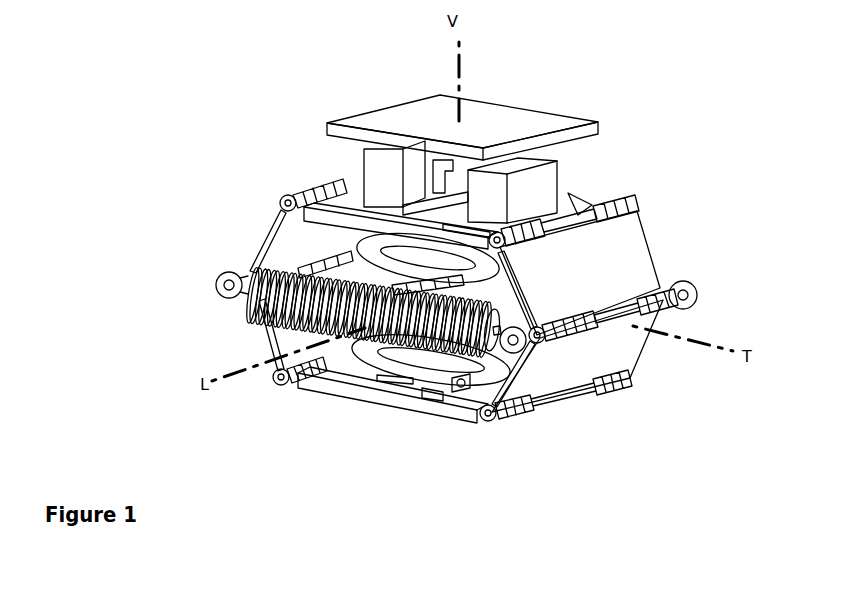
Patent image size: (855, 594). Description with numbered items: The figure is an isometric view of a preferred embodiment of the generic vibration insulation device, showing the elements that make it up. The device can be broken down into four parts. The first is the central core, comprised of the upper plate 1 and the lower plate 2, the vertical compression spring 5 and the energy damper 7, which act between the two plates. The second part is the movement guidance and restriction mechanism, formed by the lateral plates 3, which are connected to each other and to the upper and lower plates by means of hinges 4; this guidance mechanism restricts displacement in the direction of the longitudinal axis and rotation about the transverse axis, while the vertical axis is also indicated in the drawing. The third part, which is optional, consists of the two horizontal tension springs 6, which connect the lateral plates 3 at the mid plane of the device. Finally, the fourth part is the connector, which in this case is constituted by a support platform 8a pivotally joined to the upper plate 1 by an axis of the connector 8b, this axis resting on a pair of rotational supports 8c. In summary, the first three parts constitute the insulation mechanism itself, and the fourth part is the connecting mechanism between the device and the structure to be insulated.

The upper plate 1 is at (382, 217).
The lower plate 2 is at (380, 397).
The lateral plate 3 is at (600, 252).
The hinge 4 is at (293, 200).
The vertical compression spring 5 is at (430, 268).
The horizontal tension spring 6 is at (303, 302).
The energy damper 7 is at (467, 383).
The support platform 8a is at (523, 138).
The axis of the connector 8b is at (440, 185).
The rotational support of the axis of the connector 8c is at (547, 177).